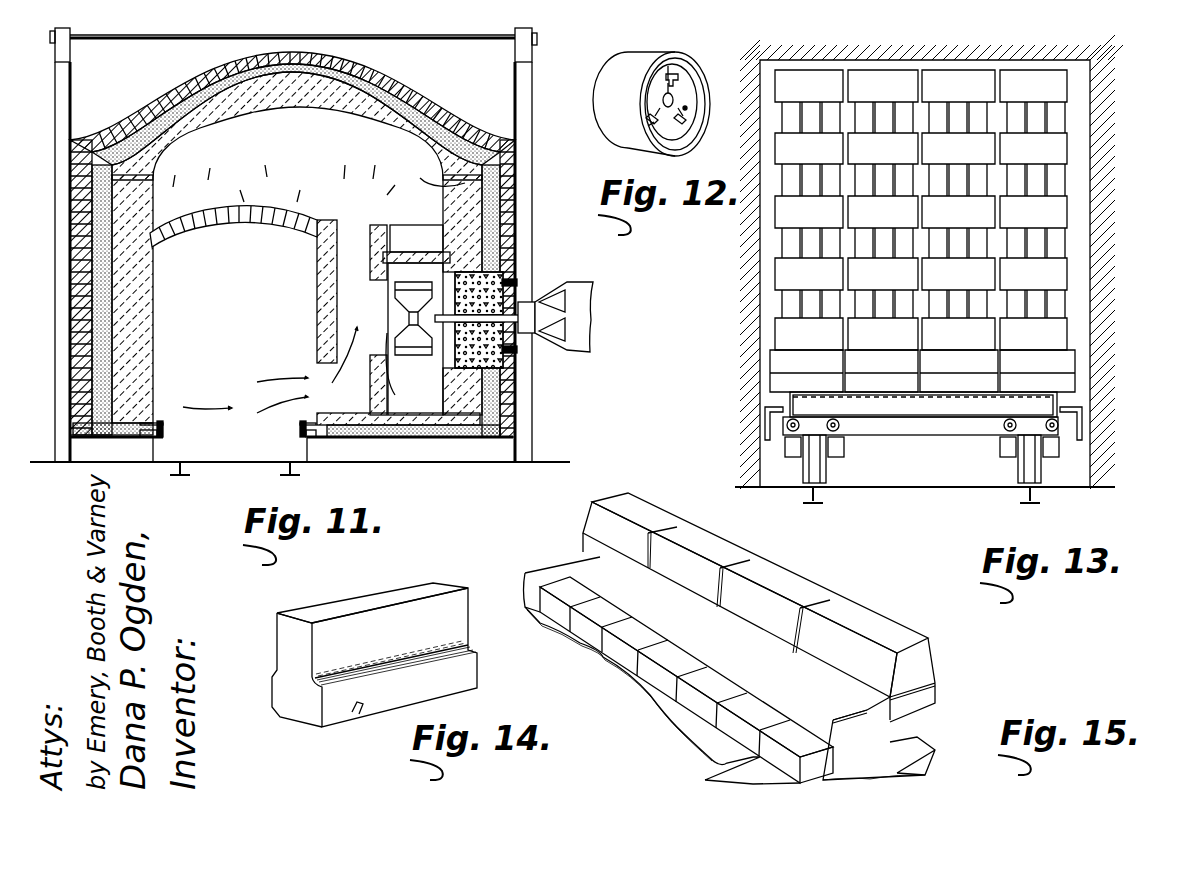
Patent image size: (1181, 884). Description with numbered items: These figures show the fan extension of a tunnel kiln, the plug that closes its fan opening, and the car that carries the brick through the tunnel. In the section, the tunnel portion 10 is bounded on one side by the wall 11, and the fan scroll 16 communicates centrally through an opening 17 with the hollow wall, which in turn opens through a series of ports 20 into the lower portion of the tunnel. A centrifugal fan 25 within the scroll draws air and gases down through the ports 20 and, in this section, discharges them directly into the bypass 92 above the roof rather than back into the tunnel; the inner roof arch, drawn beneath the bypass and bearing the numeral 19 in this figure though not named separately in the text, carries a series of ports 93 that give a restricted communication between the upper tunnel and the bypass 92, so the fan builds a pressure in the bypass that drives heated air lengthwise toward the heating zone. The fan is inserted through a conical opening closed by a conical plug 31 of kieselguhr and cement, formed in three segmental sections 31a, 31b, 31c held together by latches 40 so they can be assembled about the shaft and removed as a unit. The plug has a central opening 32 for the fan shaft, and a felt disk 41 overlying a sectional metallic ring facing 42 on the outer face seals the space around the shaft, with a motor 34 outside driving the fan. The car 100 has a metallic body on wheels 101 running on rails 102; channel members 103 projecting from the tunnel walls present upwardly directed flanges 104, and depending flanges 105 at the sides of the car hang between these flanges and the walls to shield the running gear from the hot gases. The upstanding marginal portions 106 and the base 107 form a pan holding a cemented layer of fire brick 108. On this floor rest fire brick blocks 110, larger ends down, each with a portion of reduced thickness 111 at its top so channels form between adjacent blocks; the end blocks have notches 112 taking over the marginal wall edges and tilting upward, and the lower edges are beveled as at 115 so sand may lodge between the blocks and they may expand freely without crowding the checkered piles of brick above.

In FIG. 11, the tunnel portion 10 is at (298, 260).
In FIG. 11, the wall 11 is at (155, 302).
In FIG. 11, the fan scroll 16 is at (432, 410).
In FIG. 11, the opening 17 is at (373, 303).
In FIG. 11, the baffle arch 19 is at (222, 230).
In FIG. 11, the ports 20 is at (353, 389).
In FIG. 11, the centrifugal fan 25 is at (417, 350).
In FIG. 11, the conical plug 31 is at (513, 372).
In FIG. 12, the segmental section 31a is at (667, 60).
In FIG. 12, the segmental section 31b is at (695, 82).
In FIG. 12, the segmental section 31c is at (685, 145).
In FIG. 12, the central opening 32 is at (677, 98).
In FIG. 11, the motor 34 is at (588, 310).
In FIG. 12, the latches 40 is at (675, 67).
In FIG. 11, the felt disk 41 is at (520, 293).
In FIG. 12, the felt disk 41 is at (693, 103).
In FIG. 12, the sectional metallic ring facing 42 is at (633, 112).
In FIG. 11, the bypass 92 is at (299, 131).
In FIG. 11, the ports 93 is at (237, 206).
In FIG. 13, the car 100 is at (940, 425).
In FIG. 13, the wheels 101 is at (827, 462).
In FIG. 11, the rails 102 is at (176, 465).
In FIG. 13, the rails 102 is at (825, 498).
In FIG. 11, the channel members 103 is at (165, 430).
In FIG. 11, the upwardly directed flanges 104 is at (163, 423).
In FIG. 13, the upwardly directed flanges 104 is at (762, 438).
In FIG. 13, the depending flanges 105 is at (765, 412).
In FIG. 13, the marginal portions 106 is at (790, 393).
In FIG. 15, the marginal portions 106 is at (553, 560).
In FIG. 15, the base 107 is at (680, 726).
In FIG. 15, the fire brick 108 is at (557, 612).
In FIG. 14, the fire brick blocks 110 is at (386, 658).
In FIG. 15, the fire brick blocks 110 is at (920, 683).
In FIG. 14, the reduced thickness portion 111 is at (292, 635).
In FIG. 14, the notches 112 is at (357, 712).
In FIG. 15, the notches 112 is at (860, 706).
In FIG. 14, the beveled lower edges 115 is at (468, 681).
In FIG. 15, the beveled lower edges 115 is at (930, 714).